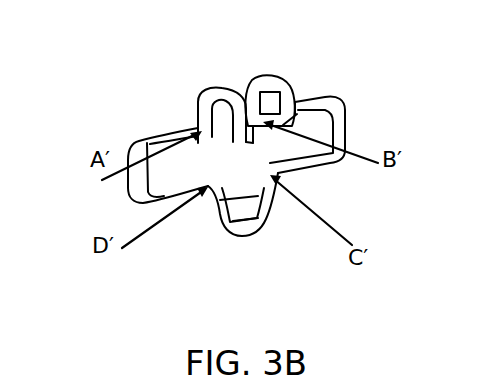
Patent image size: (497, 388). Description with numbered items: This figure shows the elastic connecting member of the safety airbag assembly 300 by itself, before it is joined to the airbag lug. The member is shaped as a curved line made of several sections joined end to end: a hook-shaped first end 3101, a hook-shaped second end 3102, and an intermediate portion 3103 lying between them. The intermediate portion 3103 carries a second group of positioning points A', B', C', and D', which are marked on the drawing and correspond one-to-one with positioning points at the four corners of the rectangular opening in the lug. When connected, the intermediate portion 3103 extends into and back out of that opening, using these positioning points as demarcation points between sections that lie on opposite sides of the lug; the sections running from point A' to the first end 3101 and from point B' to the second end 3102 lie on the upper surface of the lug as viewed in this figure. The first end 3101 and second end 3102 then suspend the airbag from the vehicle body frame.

The safety airbag assembly 300 is at (375, 40).
The first end 3101 is at (212, 95).
The second end 3102 is at (277, 84).
The intermediate portion 3103 is at (255, 218).